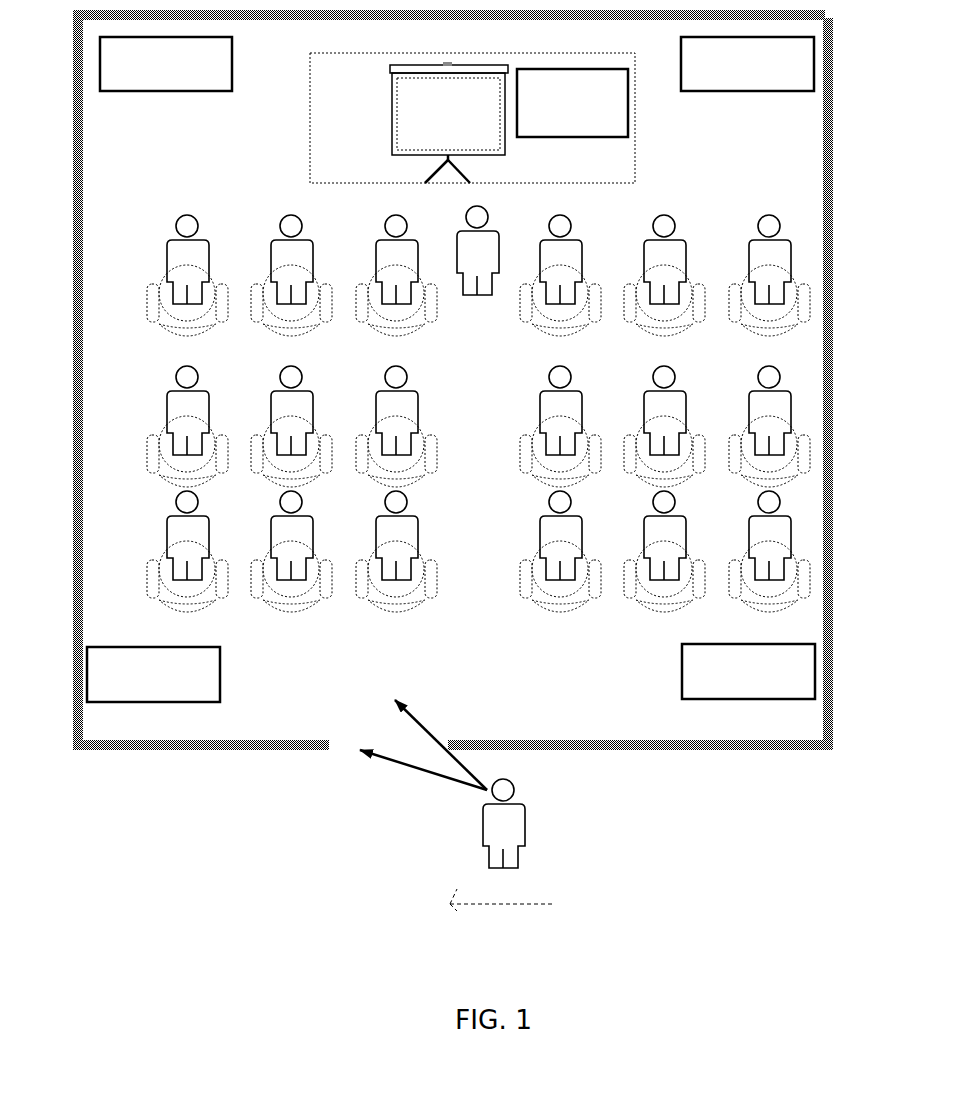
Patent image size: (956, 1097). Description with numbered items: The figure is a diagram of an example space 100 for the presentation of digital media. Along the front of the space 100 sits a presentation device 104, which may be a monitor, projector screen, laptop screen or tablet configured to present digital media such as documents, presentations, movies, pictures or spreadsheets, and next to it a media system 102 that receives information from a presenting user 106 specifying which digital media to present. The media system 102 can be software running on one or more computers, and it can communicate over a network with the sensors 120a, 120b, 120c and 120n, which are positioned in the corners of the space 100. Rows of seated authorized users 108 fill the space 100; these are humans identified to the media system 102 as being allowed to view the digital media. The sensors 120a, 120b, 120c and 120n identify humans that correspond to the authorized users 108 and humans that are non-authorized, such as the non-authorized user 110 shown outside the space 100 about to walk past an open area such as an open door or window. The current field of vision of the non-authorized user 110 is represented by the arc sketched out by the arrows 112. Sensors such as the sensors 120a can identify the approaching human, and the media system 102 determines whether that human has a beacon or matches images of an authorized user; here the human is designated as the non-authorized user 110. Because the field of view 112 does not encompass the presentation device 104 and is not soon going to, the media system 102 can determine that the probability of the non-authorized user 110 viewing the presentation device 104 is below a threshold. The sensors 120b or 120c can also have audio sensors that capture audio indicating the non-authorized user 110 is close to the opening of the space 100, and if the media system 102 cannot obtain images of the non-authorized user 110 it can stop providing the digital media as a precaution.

The space 100 is at (104, 135).
The media system 102 is at (572, 103).
The presentation device 104 is at (450, 122).
The presenting user 106 is at (489, 250).
The authorized users 108 is at (477, 408).
The non-authorized user 110 is at (526, 823).
The arrows 112 is at (423, 738).
The sensors 120a is at (166, 64).
The sensors 120b is at (153, 674).
The sensors 120c is at (748, 671).
The sensors 120n is at (747, 64).